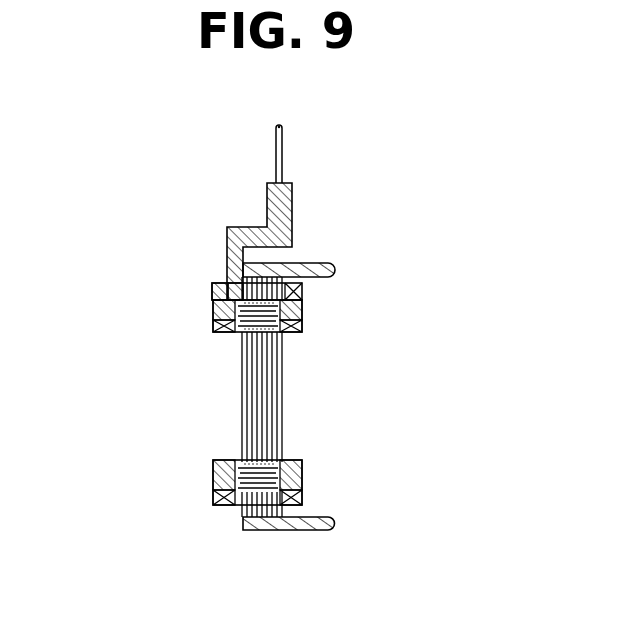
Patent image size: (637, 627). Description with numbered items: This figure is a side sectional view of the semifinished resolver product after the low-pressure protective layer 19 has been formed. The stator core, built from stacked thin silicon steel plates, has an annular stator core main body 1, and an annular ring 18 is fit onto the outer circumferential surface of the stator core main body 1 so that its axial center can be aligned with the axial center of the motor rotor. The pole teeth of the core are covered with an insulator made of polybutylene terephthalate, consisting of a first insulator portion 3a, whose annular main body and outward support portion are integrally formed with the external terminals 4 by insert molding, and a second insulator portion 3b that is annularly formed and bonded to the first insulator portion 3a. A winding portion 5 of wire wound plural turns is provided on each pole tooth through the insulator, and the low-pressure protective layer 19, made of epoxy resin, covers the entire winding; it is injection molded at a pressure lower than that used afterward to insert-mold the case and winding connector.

The stator core main body 1 is at (242, 510).
The first insulator portion 3a is at (240, 227).
The second insulator portion 3b is at (303, 288).
The external terminal 4 is at (275, 147).
The winding portion 5 is at (223, 332).
The annular ring 18 is at (307, 263).
The low-pressure protective layer 19 is at (213, 322).